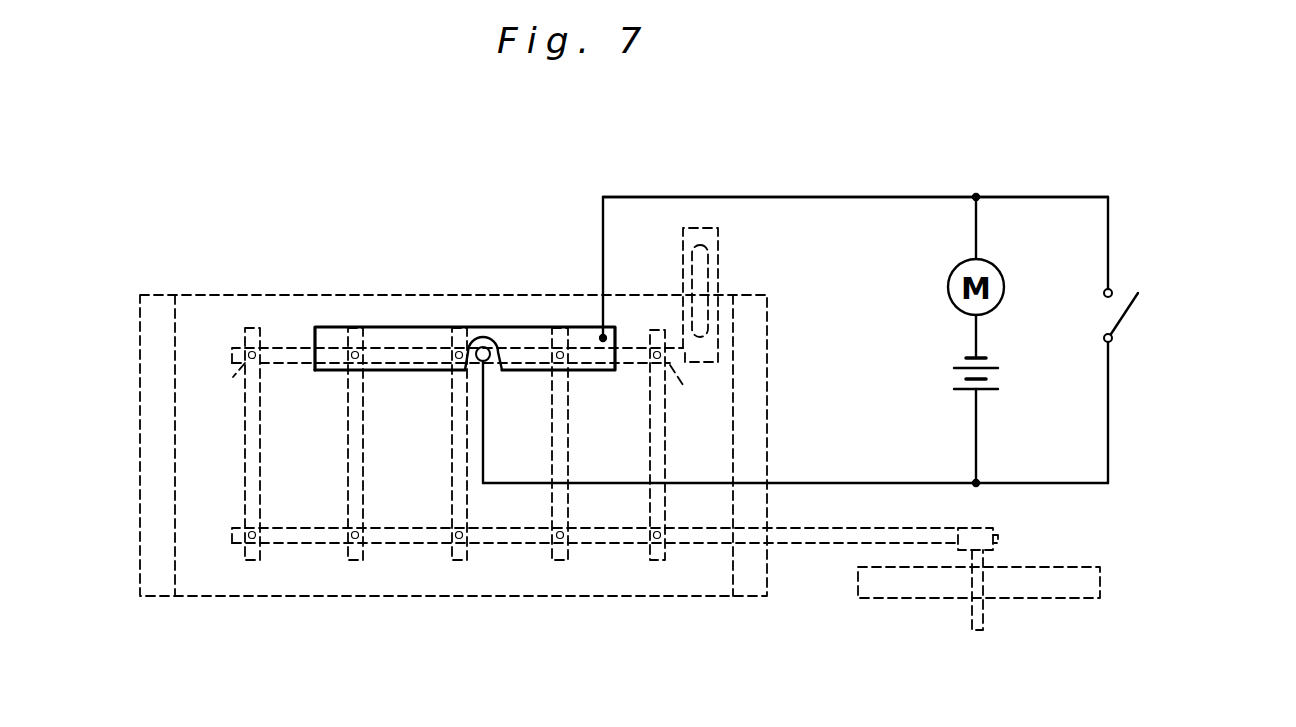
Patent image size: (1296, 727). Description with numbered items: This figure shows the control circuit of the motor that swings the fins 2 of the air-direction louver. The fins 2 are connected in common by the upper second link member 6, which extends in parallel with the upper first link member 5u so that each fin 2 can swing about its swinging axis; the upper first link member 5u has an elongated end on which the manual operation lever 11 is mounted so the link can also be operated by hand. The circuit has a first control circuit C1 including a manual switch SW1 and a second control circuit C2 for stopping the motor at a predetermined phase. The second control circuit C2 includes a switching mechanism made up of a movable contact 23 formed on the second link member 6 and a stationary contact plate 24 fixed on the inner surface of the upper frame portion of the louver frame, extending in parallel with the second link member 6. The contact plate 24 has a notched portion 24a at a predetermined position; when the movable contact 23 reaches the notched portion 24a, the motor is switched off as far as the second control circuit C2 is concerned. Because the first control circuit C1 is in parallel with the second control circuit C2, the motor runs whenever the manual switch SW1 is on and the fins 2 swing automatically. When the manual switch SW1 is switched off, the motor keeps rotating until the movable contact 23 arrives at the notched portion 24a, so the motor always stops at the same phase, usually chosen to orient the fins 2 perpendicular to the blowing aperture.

The fins 2 is at (245, 470).
The upper first link member 5u is at (325, 543).
The upper second link member 6 is at (291, 345).
The manual operation lever 11 is at (971, 632).
The movable contact 23 is at (482, 337).
The stationary contact plate 24 is at (380, 327).
The notched portion 24a is at (476, 362).
The first control circuit C1 is at (1118, 417).
The second control circuit C2 is at (802, 195).
The manual switch SW1 is at (1142, 312).